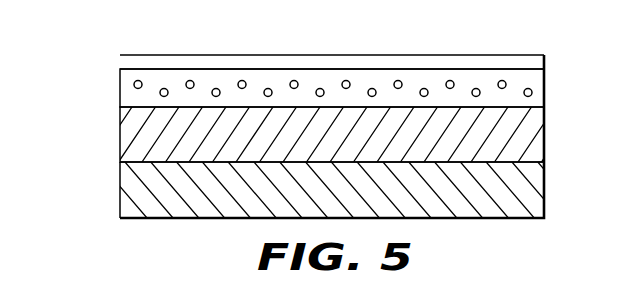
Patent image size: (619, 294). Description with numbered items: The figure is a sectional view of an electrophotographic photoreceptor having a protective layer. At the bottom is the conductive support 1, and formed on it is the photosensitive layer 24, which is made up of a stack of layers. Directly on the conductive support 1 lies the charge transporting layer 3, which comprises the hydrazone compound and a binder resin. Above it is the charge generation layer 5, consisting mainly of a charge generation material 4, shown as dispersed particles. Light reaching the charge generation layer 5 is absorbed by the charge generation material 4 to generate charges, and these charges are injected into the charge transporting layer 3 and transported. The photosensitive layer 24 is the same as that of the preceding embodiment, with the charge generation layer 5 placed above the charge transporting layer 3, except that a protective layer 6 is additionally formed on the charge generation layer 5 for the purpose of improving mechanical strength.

The conductive support 1 is at (544, 200).
The charge transporting layer 3 is at (120, 104).
The charge generation material 4 is at (133, 86).
The charge generation layer 5 is at (120, 152).
The protective layer 6 is at (120, 62).
The photosensitive layer 24 is at (334, 114).